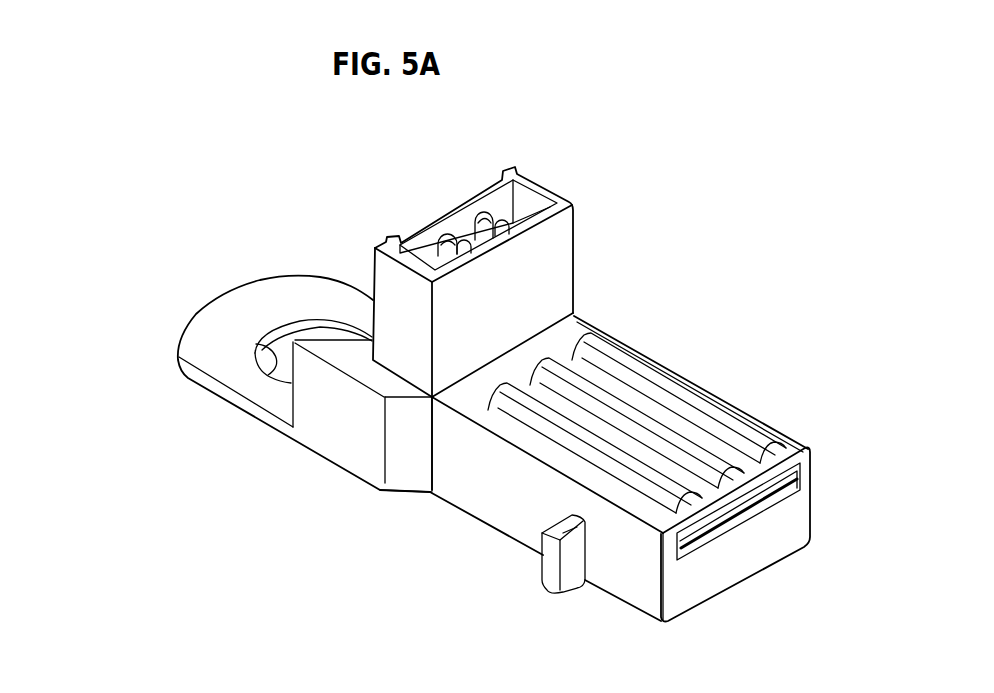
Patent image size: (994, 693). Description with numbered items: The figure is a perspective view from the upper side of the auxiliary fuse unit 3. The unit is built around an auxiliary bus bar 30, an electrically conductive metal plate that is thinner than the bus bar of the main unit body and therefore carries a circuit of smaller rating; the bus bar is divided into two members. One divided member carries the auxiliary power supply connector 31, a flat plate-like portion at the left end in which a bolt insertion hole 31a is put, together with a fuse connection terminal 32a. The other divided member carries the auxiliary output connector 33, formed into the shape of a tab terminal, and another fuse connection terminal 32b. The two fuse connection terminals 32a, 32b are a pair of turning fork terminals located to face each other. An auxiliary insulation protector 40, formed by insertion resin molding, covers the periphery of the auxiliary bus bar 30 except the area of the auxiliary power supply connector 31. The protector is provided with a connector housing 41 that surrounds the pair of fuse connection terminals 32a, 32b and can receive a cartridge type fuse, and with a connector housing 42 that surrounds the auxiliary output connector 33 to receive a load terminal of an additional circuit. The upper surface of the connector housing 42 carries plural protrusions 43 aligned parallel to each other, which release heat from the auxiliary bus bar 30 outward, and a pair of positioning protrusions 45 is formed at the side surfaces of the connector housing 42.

The auxiliary fuse unit 3 is at (170, 271).
The auxiliary bus bar 30 is at (263, 279).
The auxiliary power supply connector 31 is at (303, 293).
The bolt insertion hole 31a is at (268, 373).
The fuse connection terminal 32a is at (440, 247).
The fuse connection terminal 32b is at (476, 223).
The auxiliary output connector 33 is at (743, 510).
The auxiliary insulation protector 40 is at (602, 327).
The connector housing 41 is at (555, 263).
The connector housing 42 is at (625, 568).
The protrusions 43 is at (633, 407).
The positioning protrusions 45 is at (548, 573).